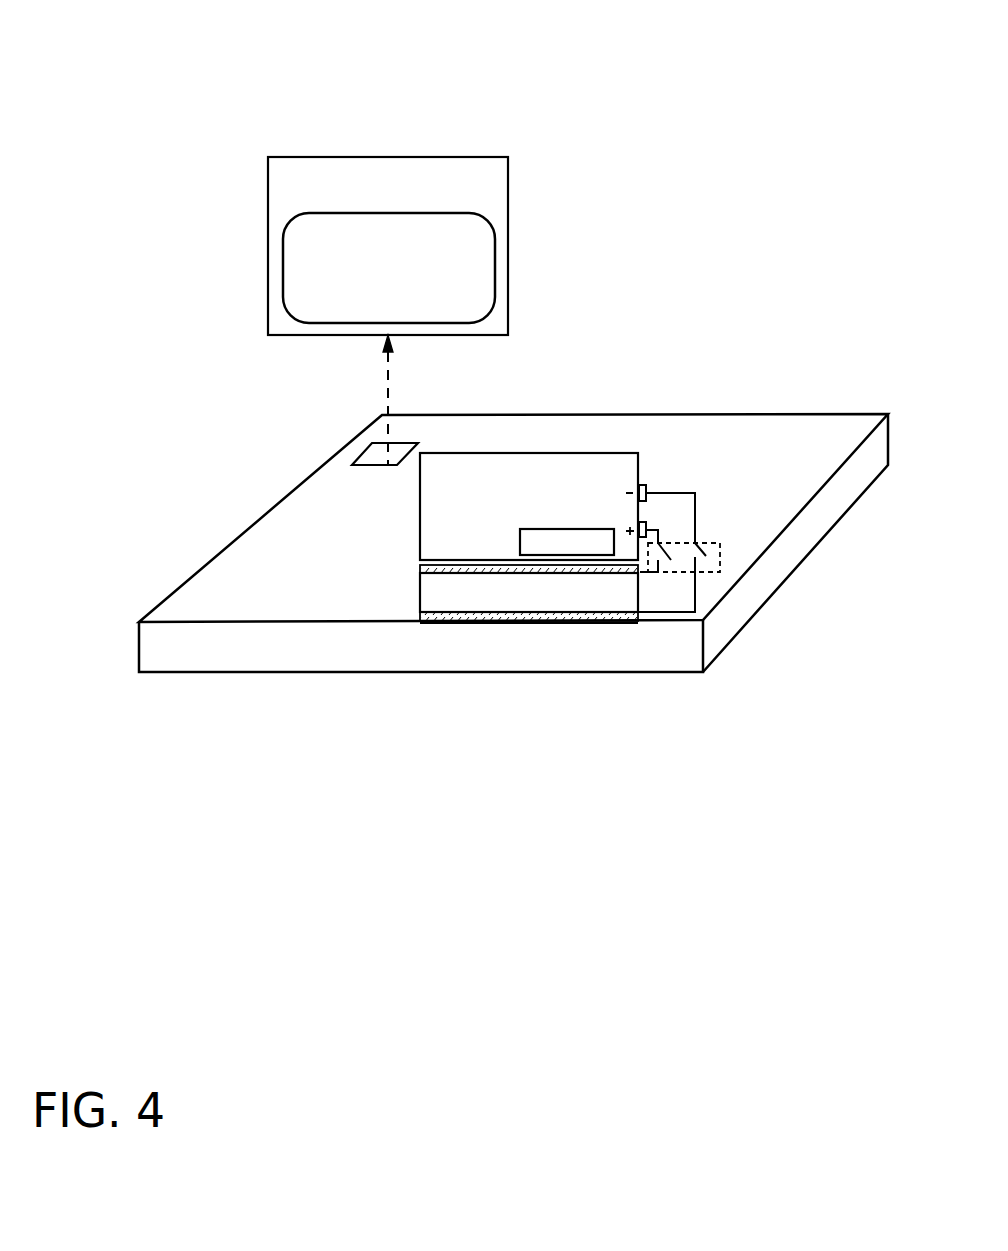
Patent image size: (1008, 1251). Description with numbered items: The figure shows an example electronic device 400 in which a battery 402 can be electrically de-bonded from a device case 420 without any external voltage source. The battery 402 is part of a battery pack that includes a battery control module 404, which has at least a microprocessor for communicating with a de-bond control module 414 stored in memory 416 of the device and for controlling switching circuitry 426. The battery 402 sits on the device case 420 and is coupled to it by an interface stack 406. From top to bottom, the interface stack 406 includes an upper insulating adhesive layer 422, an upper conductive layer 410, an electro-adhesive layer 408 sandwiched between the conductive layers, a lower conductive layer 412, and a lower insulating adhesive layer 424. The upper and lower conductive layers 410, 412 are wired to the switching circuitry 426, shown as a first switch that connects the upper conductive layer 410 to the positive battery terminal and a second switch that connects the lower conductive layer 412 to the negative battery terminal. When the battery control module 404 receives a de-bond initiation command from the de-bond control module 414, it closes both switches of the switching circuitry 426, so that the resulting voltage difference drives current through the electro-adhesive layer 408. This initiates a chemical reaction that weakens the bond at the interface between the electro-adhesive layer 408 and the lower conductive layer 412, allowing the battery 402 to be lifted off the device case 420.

The electronic device 400 is at (171, 66).
The battery 402 is at (532, 519).
The battery control module 404 is at (588, 554).
The interface stack 406 is at (418, 620).
The electro-adhesive layer 408 is at (550, 606).
The upper conductive layer 410 is at (418, 565).
The lower conductive layer 412 is at (418, 620).
The de-bond control module 414 is at (410, 309).
The memory 416 is at (458, 194).
The device case 420 is at (779, 454).
The upper insulating adhesive layer 422 is at (473, 560).
The lower insulating adhesive layer 424 is at (497, 622).
The switching circuitry 426 is at (705, 540).